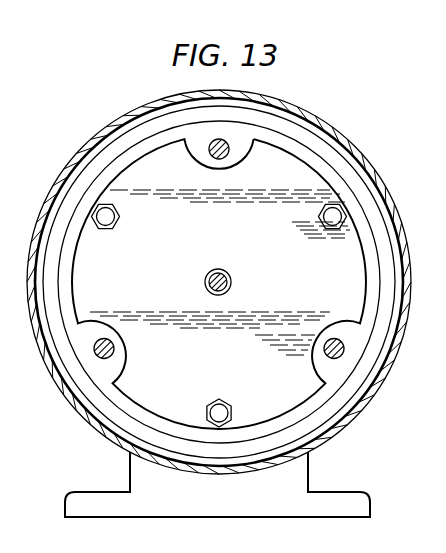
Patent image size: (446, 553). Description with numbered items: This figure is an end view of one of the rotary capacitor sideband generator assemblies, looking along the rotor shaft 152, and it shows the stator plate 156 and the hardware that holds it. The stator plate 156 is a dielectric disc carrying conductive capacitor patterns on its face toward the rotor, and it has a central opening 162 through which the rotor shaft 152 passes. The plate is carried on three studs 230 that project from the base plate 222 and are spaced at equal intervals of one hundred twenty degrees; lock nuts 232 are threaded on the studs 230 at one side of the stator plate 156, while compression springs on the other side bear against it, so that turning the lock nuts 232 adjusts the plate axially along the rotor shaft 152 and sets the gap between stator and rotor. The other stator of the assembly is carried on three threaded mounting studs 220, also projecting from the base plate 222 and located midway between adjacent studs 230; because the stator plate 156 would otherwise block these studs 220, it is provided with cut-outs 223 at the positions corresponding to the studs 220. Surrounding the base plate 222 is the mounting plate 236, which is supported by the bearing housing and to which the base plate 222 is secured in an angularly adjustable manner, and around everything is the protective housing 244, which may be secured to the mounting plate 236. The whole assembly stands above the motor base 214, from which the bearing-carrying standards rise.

The rotor shaft 152 is at (227, 274).
The stator plate 156 is at (286, 163).
The central opening 162 is at (212, 296).
The motor base 214 is at (286, 472).
The mounting studs 220 is at (228, 152).
The base plate 222 is at (130, 160).
The cut-outs 223 is at (185, 142).
The studs 230 is at (114, 226).
The lock nuts 232 is at (120, 216).
The mounting plate 236 is at (88, 183).
The housing 244 is at (370, 162).